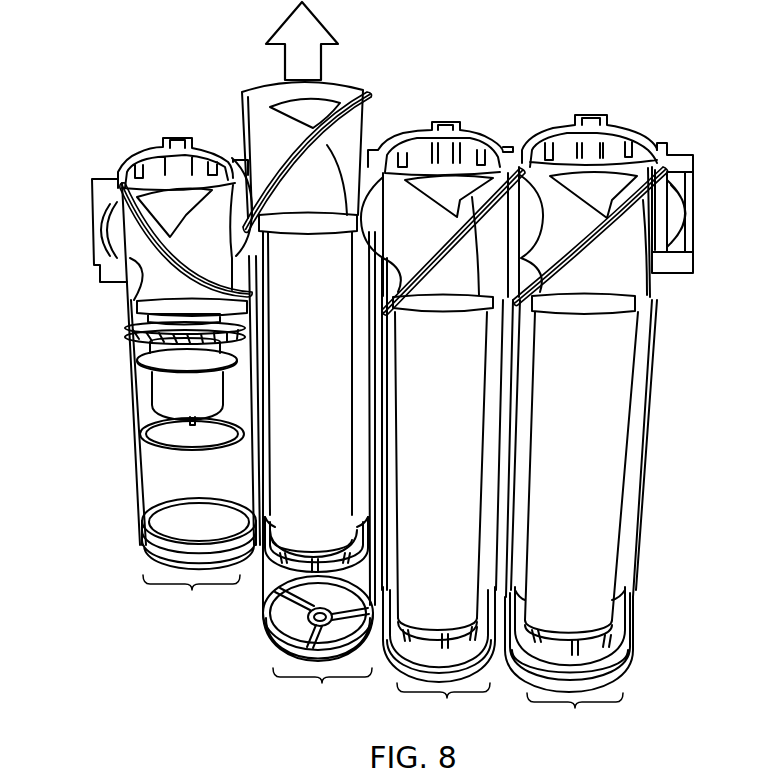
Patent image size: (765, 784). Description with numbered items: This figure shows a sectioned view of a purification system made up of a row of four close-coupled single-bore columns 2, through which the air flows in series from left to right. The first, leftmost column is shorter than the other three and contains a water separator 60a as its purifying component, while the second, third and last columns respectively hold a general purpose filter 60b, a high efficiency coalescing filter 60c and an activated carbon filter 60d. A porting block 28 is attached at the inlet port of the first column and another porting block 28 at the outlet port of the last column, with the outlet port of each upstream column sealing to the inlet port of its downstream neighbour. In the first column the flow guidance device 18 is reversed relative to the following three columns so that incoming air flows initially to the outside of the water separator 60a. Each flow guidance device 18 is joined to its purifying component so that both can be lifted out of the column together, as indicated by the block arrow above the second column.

The column 2 is at (192, 590).
The flow guidance device 18 is at (621, 293).
The porting block 28 is at (92, 179).
The water separator 60a is at (168, 387).
The general purpose filter 60b is at (285, 401).
The high efficiency coalescing filter 60c is at (413, 478).
The activated carbon filter 60d is at (552, 488).